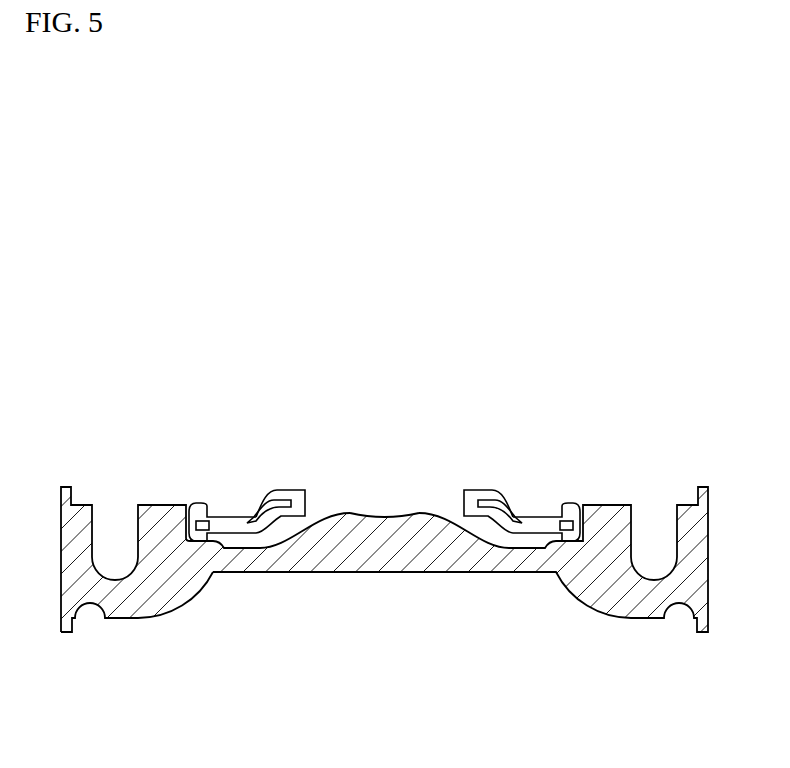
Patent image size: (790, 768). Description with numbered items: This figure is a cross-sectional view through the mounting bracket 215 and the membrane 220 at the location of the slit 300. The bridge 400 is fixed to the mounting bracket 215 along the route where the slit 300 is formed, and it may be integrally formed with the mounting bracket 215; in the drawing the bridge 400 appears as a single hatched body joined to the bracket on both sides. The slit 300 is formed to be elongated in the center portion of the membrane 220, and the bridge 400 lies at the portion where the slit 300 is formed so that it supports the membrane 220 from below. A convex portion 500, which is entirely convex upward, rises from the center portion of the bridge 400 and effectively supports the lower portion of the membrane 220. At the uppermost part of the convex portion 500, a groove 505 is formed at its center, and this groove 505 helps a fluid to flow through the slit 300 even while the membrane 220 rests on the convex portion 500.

The mounting bracket 215 is at (147, 608).
The membrane 220 is at (222, 517).
The slit 300 is at (313, 502).
The bridge 400 is at (370, 572).
The convex portion 500 is at (383, 535).
The groove 505 is at (387, 513).